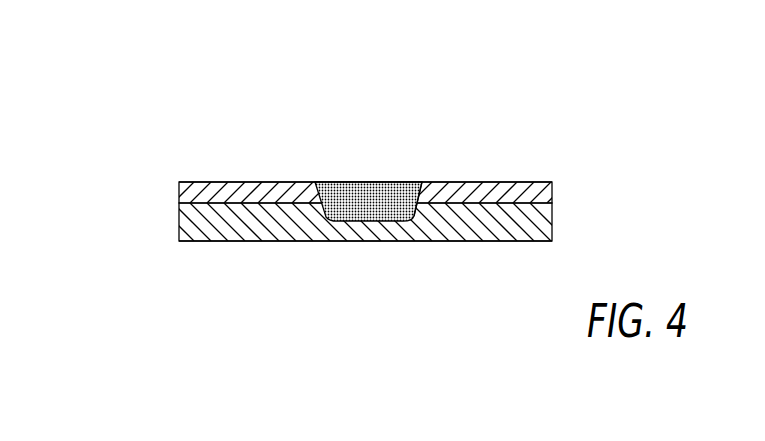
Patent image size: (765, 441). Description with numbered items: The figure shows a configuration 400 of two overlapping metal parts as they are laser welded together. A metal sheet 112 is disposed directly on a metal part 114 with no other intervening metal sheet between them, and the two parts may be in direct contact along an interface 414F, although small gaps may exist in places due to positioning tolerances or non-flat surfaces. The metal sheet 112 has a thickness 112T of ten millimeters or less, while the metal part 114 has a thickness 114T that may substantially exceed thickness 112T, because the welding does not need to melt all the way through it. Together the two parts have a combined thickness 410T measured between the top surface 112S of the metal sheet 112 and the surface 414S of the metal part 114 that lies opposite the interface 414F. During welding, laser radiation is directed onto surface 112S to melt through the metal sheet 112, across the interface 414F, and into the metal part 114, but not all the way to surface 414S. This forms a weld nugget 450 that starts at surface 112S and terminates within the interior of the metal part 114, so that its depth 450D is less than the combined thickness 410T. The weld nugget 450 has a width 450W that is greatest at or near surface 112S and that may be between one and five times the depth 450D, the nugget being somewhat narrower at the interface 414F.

The configuration 400 is at (114, 44).
The metal sheet 112 is at (179, 190).
The metal part 114 is at (179, 224).
The surface 112S is at (224, 176).
The surface 414S is at (246, 249).
The interface 414F is at (429, 178).
The weld nugget 450 is at (382, 208).
The width 450W is at (421, 157).
The depth 450D is at (303, 158).
The thickness 112T is at (486, 256).
The thickness 114T is at (518, 170).
The combined thickness 410T is at (598, 182).